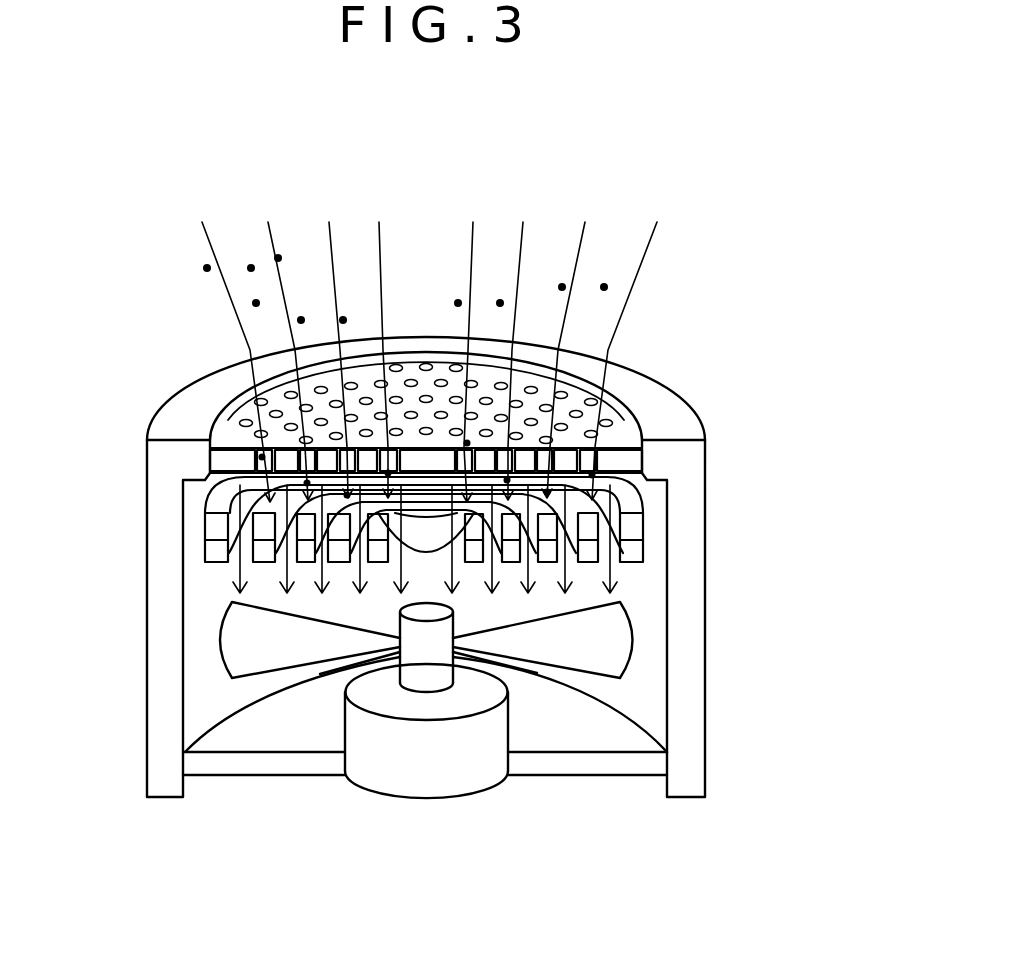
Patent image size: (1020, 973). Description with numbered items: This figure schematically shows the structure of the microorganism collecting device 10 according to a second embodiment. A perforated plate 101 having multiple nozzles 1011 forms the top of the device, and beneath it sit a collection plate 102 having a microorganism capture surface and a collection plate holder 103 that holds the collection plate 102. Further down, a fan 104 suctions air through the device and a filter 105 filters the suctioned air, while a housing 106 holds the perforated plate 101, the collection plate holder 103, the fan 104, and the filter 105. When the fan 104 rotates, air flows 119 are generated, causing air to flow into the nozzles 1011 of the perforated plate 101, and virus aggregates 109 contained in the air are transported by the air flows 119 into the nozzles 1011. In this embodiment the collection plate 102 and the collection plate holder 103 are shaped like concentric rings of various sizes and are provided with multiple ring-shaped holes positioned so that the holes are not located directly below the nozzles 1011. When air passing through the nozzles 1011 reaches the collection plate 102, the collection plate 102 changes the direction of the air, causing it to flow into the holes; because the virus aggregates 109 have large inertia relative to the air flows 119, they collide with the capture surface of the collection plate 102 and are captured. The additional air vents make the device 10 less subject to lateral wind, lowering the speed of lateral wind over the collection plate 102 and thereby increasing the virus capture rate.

The microorganism collecting device 10 is at (180, 347).
The perforated plate 101 is at (680, 412).
The nozzles 1011 is at (170, 402).
The collection plate 102 is at (625, 497).
The collection plate holder 103 is at (630, 552).
The fan 104 is at (622, 647).
The filter 105 is at (622, 727).
The housing 106 is at (680, 595).
The virus aggregates 109 is at (605, 285).
The air flows 119 is at (626, 302).